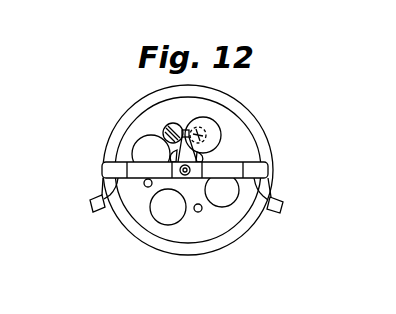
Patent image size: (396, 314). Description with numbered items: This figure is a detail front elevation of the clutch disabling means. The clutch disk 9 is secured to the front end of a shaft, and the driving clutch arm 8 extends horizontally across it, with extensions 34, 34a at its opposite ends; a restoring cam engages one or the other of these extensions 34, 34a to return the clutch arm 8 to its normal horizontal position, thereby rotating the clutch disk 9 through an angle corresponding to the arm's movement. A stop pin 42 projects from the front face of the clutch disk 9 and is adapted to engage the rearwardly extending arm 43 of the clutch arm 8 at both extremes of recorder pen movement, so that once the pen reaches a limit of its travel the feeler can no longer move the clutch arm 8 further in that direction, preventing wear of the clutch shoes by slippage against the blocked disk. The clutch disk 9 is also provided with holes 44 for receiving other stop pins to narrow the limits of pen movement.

The clutch arm 8 is at (262, 171).
The clutch disk 9 is at (245, 146).
The extension 34 is at (89, 196).
The extension 34a is at (283, 198).
The stop pin 42 is at (167, 132).
The rearwardly extending arm 43 is at (186, 130).
The holes 44 is at (146, 186).